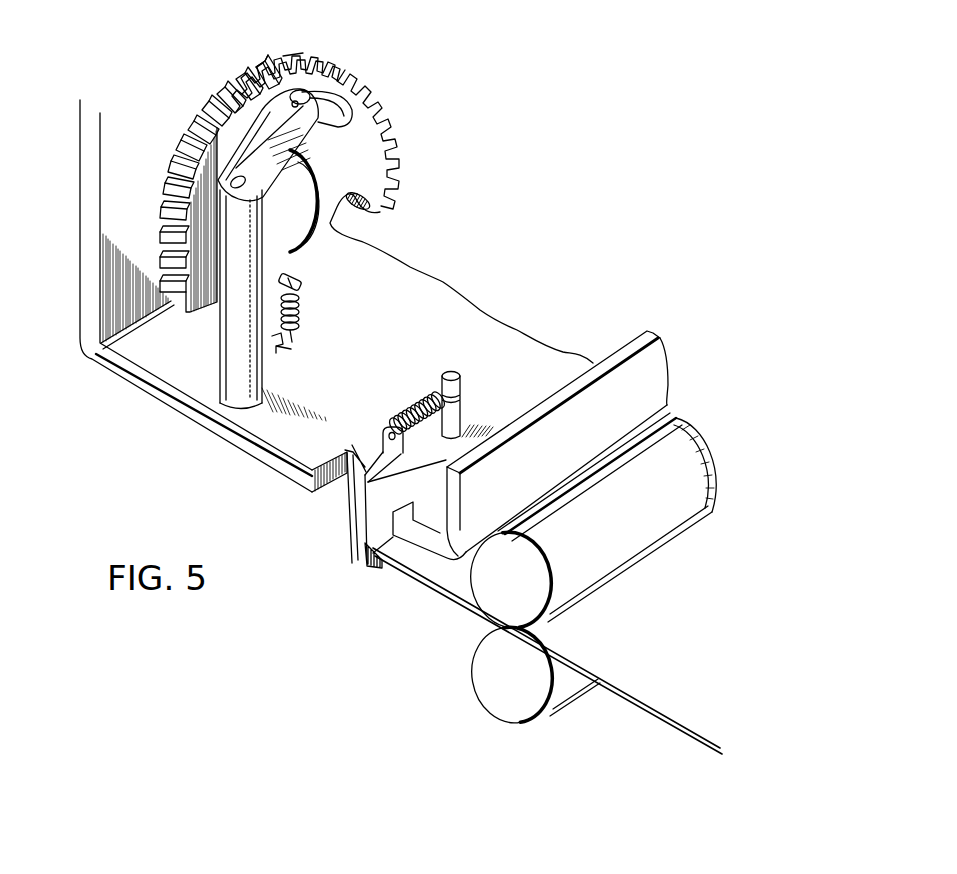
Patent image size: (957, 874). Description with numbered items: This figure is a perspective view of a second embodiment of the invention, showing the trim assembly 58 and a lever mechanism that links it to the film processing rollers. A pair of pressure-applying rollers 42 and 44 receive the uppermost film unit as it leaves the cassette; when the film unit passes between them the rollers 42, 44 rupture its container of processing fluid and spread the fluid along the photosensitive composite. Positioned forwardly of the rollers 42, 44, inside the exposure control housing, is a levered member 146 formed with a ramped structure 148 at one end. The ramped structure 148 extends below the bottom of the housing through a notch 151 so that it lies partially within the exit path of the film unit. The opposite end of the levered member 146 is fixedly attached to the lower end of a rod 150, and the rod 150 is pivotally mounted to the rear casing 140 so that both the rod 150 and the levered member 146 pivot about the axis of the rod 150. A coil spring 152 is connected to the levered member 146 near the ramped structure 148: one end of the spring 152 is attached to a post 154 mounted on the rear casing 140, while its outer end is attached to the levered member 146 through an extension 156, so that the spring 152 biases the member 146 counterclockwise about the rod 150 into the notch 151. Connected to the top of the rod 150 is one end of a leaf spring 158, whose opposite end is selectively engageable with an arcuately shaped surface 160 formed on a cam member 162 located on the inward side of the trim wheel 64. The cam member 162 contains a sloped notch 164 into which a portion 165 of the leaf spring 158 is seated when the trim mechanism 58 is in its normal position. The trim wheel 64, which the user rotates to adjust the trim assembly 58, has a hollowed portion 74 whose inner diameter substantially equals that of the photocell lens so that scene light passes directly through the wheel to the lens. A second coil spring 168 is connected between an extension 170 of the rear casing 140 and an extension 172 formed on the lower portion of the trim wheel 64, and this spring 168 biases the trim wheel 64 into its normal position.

The pressure-applying roller 42 is at (530, 591).
The pressure-applying roller 44 is at (530, 682).
The trim assembly 58 is at (285, 48).
The trim wheel 64 is at (337, 58).
The hollowed portion 74 is at (281, 222).
The rear casing 140 is at (201, 388).
The levered member 146 is at (327, 437).
The ramped structure 148 is at (352, 515).
The rod 150 is at (240, 358).
The notch 151 is at (385, 505).
The coil spring 152 is at (420, 396).
The post 154 is at (467, 402).
The extension 156 is at (230, 205).
The leaf spring 158 is at (272, 164).
The arcuately shaped surface 160 is at (258, 128).
The cam member 162 is at (342, 130).
The sloped notch 164 is at (306, 104).
The portion of leaf spring 165 is at (257, 75).
The coil spring 168 is at (300, 306).
The extension of rear casing 170 is at (303, 339).
The extension of trim wheel 172 is at (302, 284).